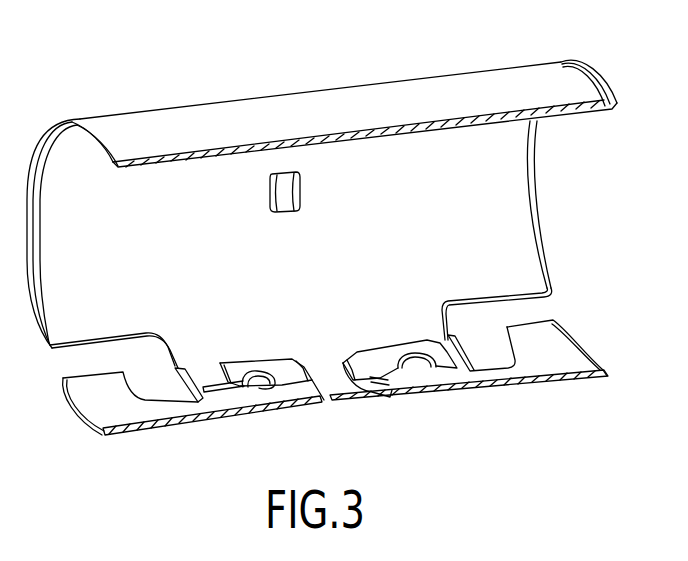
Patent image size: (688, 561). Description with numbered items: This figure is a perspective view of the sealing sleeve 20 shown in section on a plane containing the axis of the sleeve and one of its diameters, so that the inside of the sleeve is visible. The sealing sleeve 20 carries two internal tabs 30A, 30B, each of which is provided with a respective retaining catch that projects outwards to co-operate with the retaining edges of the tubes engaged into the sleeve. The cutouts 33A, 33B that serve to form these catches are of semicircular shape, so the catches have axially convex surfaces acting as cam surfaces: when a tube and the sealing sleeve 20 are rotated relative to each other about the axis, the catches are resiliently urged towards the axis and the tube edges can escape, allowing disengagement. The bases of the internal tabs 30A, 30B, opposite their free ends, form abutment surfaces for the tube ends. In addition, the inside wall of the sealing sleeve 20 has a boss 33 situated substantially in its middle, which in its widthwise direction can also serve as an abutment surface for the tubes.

The sealing sleeve 20 is at (322, 248).
The boss 33 is at (287, 204).
The internal tab 30A is at (402, 369).
The internal tab 30B is at (272, 381).
The cutout 33A is at (420, 360).
The cutout 33B is at (252, 388).